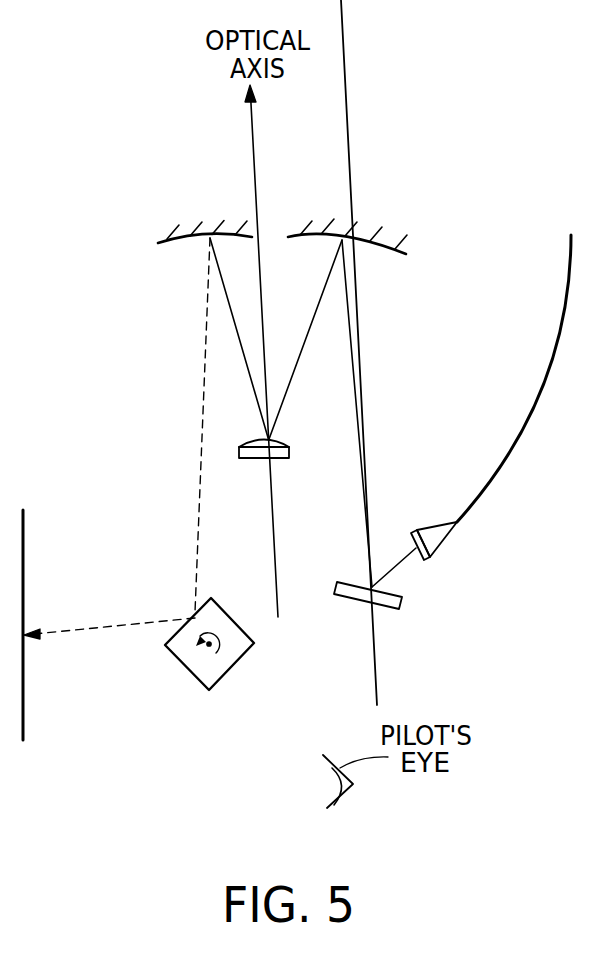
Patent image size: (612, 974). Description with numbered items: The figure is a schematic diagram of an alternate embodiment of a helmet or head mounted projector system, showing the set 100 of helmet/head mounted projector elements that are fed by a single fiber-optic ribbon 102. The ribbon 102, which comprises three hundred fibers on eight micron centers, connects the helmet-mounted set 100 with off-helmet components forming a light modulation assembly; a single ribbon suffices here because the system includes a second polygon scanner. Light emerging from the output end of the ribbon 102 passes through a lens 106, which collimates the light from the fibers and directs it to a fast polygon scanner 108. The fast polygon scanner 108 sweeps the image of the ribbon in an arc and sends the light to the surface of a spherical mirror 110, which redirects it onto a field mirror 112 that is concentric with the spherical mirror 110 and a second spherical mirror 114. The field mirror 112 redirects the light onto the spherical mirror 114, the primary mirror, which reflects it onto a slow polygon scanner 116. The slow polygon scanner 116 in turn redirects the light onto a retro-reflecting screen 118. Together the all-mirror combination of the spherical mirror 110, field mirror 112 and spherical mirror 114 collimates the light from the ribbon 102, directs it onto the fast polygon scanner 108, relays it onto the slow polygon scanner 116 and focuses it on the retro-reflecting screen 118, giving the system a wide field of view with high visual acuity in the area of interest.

The set of helmet/head mounted projector elements 100 is at (452, 170).
The fiber-optic ribbon 102 is at (518, 433).
The lens 106 is at (437, 522).
The fast polygon scanner 108 is at (354, 580).
The spherical mirror 110 is at (401, 257).
The field mirror 112 is at (283, 443).
The spherical mirror 114 is at (162, 246).
The slow polygon scanner 116 is at (177, 658).
The retro-reflecting screen 118 is at (26, 540).